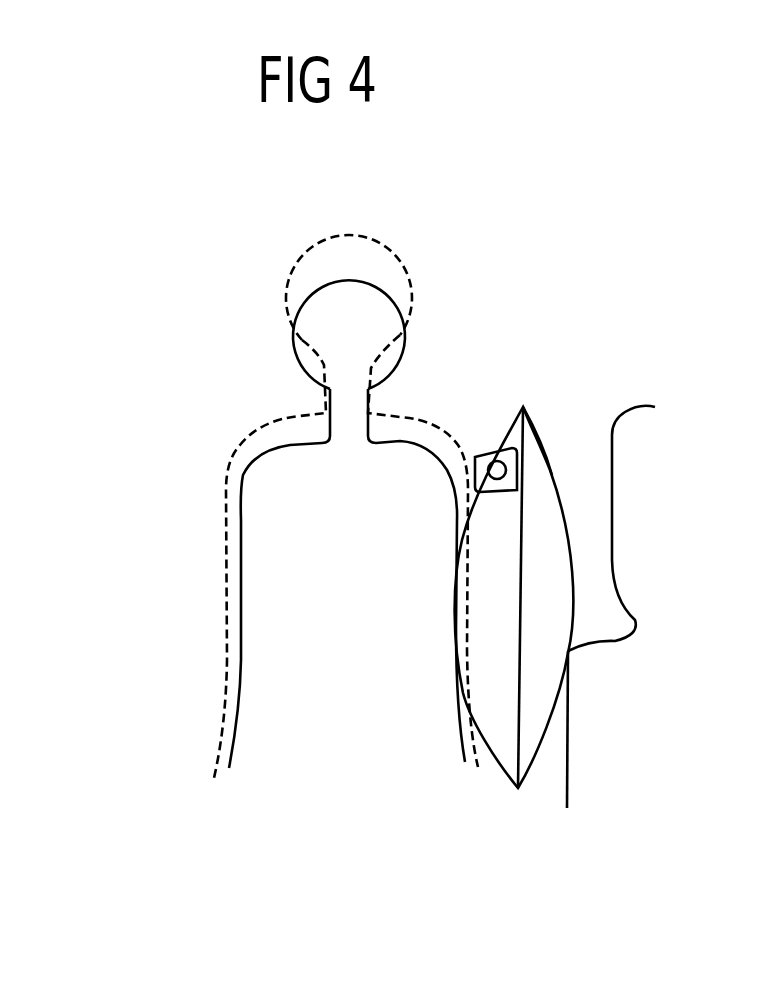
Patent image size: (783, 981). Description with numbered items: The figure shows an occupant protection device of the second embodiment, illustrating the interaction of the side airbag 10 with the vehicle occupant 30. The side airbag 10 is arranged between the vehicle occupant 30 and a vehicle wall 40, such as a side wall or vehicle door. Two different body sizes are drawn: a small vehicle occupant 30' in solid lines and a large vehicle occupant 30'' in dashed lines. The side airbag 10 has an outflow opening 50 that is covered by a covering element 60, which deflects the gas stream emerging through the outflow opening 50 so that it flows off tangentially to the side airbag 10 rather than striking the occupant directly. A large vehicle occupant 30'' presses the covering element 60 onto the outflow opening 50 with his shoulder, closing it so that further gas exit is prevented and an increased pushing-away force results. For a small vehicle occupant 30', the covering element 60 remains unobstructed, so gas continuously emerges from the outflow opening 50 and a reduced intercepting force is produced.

The side airbag 10 is at (535, 767).
The vehicle occupant 30 is at (288, 487).
The small vehicle occupant 30' is at (281, 524).
The large vehicle occupant 30'' is at (311, 506).
The vehicle wall 40 is at (613, 515).
The outflow opening 50 is at (531, 432).
The covering element 60 is at (483, 453).